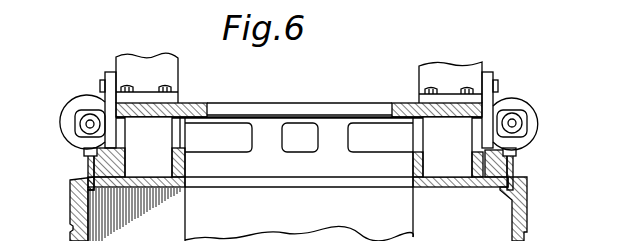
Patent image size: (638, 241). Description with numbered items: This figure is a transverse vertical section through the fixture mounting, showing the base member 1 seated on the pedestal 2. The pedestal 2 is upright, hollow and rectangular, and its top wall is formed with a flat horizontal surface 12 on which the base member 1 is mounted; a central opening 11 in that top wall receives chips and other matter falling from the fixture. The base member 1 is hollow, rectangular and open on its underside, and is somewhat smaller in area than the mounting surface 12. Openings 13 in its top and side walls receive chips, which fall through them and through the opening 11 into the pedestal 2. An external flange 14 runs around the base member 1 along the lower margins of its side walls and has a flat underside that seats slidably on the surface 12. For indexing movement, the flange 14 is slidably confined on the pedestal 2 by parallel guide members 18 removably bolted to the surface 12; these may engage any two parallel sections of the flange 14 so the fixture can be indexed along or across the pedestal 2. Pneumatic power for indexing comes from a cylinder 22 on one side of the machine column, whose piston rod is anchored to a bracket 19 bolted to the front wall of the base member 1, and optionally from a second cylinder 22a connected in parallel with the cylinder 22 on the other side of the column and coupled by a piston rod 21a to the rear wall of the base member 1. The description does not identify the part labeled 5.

The base member 1 is at (189, 104).
The pedestal 2 is at (527, 208).
The stop block 5 is at (170, 66).
The central opening 11 is at (386, 190).
The flat horizontal surface 12 is at (308, 174).
The openings 13 is at (336, 105).
The external flange 14 is at (494, 189).
The guide members 18 is at (76, 162).
The bracket 19 is at (110, 133).
The piston rod 21a is at (520, 126).
The cylinder 22 is at (92, 101).
The cylinder 22a is at (538, 126).